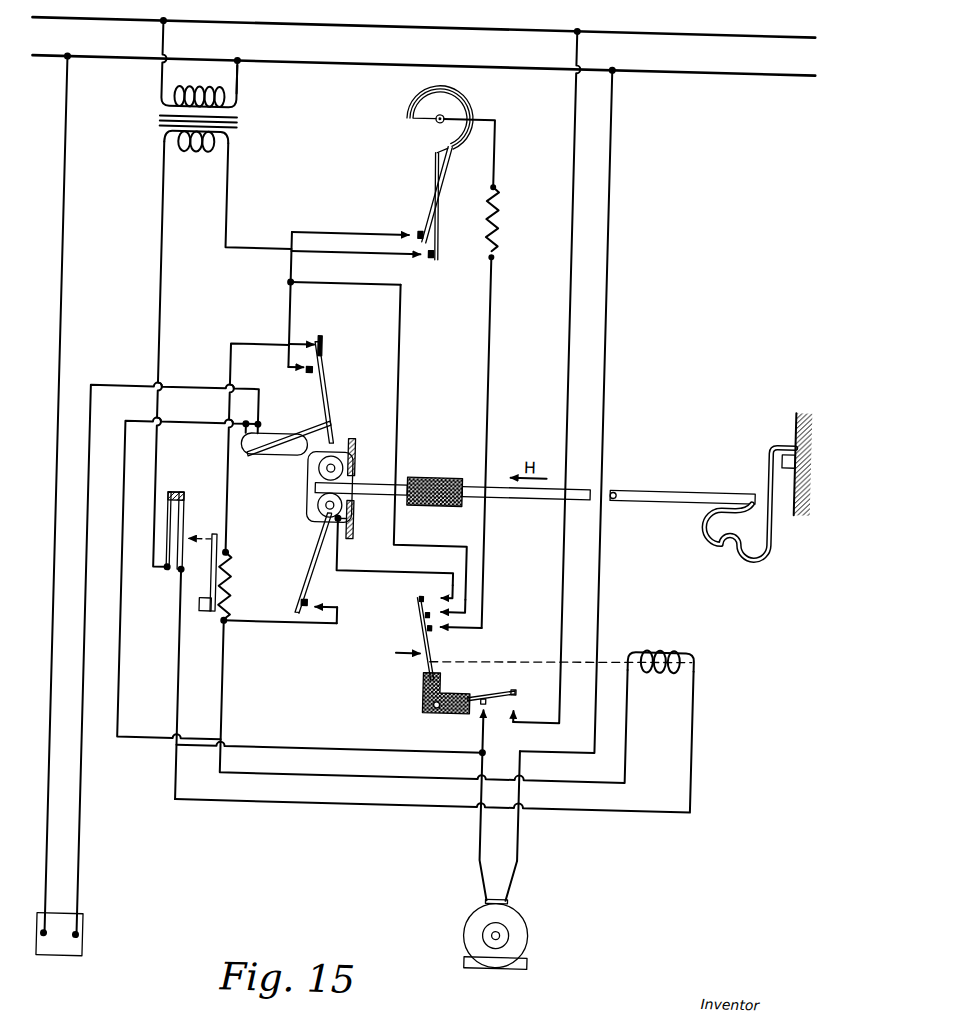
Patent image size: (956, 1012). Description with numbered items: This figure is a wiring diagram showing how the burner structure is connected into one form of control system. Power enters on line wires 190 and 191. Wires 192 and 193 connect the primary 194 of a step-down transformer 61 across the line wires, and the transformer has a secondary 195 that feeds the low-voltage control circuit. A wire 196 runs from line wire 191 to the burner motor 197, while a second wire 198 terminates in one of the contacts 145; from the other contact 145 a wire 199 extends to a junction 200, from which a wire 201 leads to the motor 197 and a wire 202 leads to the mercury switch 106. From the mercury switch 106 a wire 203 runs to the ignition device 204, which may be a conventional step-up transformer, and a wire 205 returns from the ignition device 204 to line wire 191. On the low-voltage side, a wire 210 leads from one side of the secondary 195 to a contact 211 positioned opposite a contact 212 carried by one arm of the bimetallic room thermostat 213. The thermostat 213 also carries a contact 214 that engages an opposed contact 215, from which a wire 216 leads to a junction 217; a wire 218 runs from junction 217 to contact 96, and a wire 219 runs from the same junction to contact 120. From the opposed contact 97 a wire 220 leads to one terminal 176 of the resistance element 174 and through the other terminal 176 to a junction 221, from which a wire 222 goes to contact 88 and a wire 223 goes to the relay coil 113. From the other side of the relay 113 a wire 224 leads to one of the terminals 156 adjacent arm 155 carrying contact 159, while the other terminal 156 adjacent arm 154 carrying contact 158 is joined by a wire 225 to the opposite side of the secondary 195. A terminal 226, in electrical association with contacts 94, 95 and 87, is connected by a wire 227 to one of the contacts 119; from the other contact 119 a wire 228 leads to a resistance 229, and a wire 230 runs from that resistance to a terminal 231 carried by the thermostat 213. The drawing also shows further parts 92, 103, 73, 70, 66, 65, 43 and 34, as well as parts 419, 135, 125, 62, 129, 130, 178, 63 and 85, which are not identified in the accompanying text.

The line wire 190 is at (675, 28).
The line wire 191 is at (675, 66).
The wire 192 is at (148, 89).
The wire 193 is at (232, 86).
The primary 194 is at (232, 106).
The transformer 61 is at (240, 130).
The secondary 195 is at (224, 145).
The wire 210 is at (220, 208).
The wire 225 is at (154, 264).
The wire 205 is at (60, 357).
The ignition device 204 is at (93, 946).
The wire 203 is at (90, 580).
The wire 218 is at (283, 318).
The wire 216 is at (305, 236).
The contact 211 is at (412, 260).
The junction 217 is at (283, 287).
The wire 220 is at (227, 353).
The contact 97 is at (316, 346).
The contact 95 is at (319, 342).
The contact 96 is at (300, 378).
The contact 94 is at (311, 373).
The lever 92 is at (325, 428).
The mercury switch 106 is at (252, 462).
The armature 103 is at (310, 432).
The roller 73 is at (318, 476).
The roller 70 is at (318, 510).
The rod 66 is at (377, 486).
The block 65 is at (444, 478).
The rod 43 is at (675, 486).
The spring 34 is at (766, 540).
The terminal 226 is at (347, 522).
The wire 227 is at (378, 574).
The contacts 119 is at (447, 598).
The wire 219 is at (398, 382).
The contact 120 is at (470, 614).
The wire 230 is at (488, 160).
The resistance 229 is at (492, 204).
The wire 228 is at (489, 372).
The contact 419 is at (447, 632).
The bimetallic room thermostat 213 is at (453, 112).
The terminal 231 is at (425, 124).
The contact 214 is at (412, 232).
The contact 215 is at (407, 236).
The contact 212 is at (426, 262).
The wire 198 is at (564, 326).
The wire 196 is at (602, 260).
The junction 200 is at (498, 752).
The contacts 145 is at (522, 698).
The wire 199 is at (487, 733).
The contact arm 135 is at (486, 697).
The bracket 125 is at (428, 696).
The lever 62 is at (402, 638).
The contact 129 is at (420, 605).
The contact 130 is at (426, 618).
The relay coil 113 is at (684, 646).
The wire 224 is at (634, 807).
The wire 223 is at (228, 698).
The wire 202 is at (331, 750).
The wire 201 is at (486, 844).
The burner motor 197 is at (534, 916).
The arm 154 is at (166, 530).
The arm 155 is at (185, 532).
The contact 158 is at (174, 498).
The contact 159 is at (184, 498).
The terminals 156 is at (182, 582).
The actuator plate 178 is at (216, 576).
The resistance element 174 is at (232, 585).
The junction 63 is at (236, 558).
The terminals 176 is at (228, 558).
The junction 221 is at (236, 630).
The wire 222 is at (304, 628).
The contact 88 is at (336, 610).
The lever 85 is at (313, 573).
The contact 87 is at (312, 606).